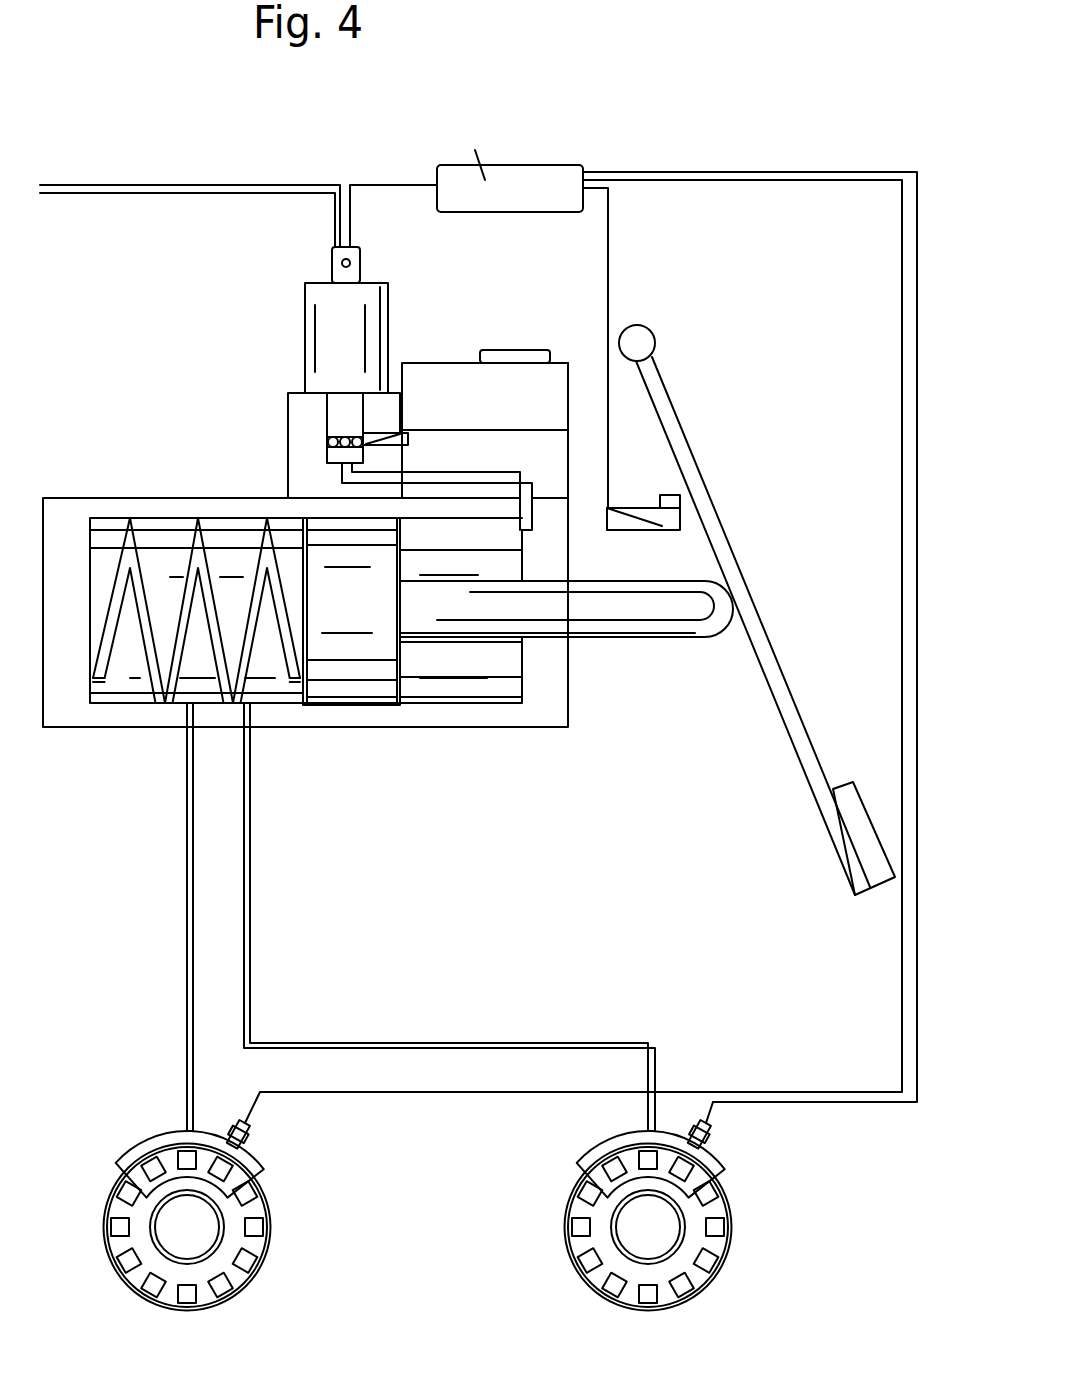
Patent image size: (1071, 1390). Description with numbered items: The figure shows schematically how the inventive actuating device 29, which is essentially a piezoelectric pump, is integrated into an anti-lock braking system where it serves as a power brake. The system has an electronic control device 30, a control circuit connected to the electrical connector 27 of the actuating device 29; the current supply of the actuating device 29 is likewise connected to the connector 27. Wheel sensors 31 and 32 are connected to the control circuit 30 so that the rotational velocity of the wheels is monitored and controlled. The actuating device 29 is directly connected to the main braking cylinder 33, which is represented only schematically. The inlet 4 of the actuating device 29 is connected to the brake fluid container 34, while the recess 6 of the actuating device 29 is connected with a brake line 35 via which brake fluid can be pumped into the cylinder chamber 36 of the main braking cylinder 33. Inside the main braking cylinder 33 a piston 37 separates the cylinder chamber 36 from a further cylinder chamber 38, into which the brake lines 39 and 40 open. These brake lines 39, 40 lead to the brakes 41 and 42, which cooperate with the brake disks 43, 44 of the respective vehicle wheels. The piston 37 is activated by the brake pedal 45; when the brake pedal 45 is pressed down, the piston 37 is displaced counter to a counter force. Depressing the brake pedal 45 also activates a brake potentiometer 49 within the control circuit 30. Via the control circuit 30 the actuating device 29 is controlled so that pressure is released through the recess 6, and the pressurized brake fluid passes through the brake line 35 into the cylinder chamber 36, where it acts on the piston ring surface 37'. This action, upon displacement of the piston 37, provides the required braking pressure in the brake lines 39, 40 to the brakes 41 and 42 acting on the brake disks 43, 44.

The electronic control device 30 is at (552, 175).
The electrical connector 27 is at (332, 263).
The actuating device 29 is at (370, 313).
The brake fluid container 34 is at (318, 433).
The inlet 4 is at (383, 437).
The recess 6 is at (326, 457).
The main braking cylinder 33 is at (136, 508).
The brake line 35 is at (497, 478).
The brake potentiometer 49 is at (660, 515).
The cylinder chamber 36 is at (505, 670).
The piston 37 is at (351, 661).
The piston ring surface 37' is at (566, 692).
The brake pedal 45 is at (773, 675).
The further cylinder chamber 38 is at (128, 687).
The brake line 40 is at (186, 922).
The brake line 39 is at (251, 917).
The brake 42 is at (143, 1135).
The wheel sensor 32 is at (252, 1137).
The brake disk 44 is at (218, 1268).
The brake 41 is at (593, 1147).
The wheel sensor 31 is at (712, 1133).
The brake disk 43 is at (683, 1273).